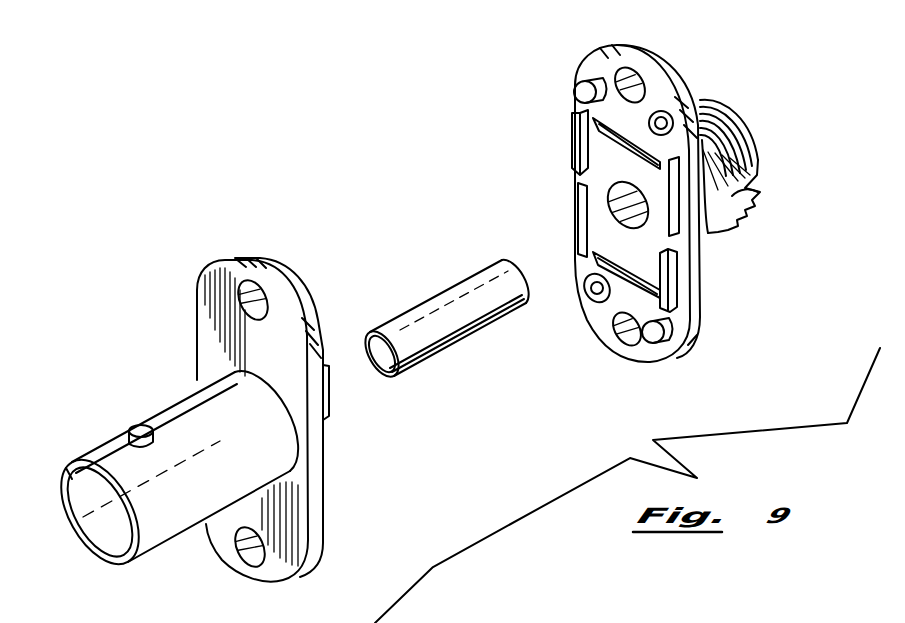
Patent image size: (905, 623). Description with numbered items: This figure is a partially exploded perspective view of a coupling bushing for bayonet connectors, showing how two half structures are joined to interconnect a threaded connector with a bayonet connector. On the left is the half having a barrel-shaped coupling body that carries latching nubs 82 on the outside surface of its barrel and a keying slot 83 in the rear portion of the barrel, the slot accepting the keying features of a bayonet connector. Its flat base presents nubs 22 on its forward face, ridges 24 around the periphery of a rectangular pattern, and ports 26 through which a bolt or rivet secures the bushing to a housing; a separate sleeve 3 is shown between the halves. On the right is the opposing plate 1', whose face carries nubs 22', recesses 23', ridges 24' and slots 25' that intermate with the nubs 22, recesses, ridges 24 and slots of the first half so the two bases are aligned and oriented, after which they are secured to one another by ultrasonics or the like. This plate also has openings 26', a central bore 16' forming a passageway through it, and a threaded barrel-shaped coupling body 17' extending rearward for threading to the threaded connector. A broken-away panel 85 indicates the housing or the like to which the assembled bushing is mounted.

The nubs 22 is at (281, 420).
The ridges 24 is at (358, 396).
The ports 26 is at (243, 410).
The split sleeve 3 is at (450, 287).
The latching nubs 82 is at (143, 426).
The keying slot 83 is at (58, 492).
The panel 85 is at (570, 622).
The mounting plate 1' is at (644, 183).
The central opening 16' is at (628, 221).
The knurled knob 17' is at (758, 153).
The nubs 22' is at (587, 245).
The recesses 23' is at (624, 202).
The ridges 24' is at (638, 211).
The slots 25' is at (631, 208).
The mounting holes 26' is at (600, 213).